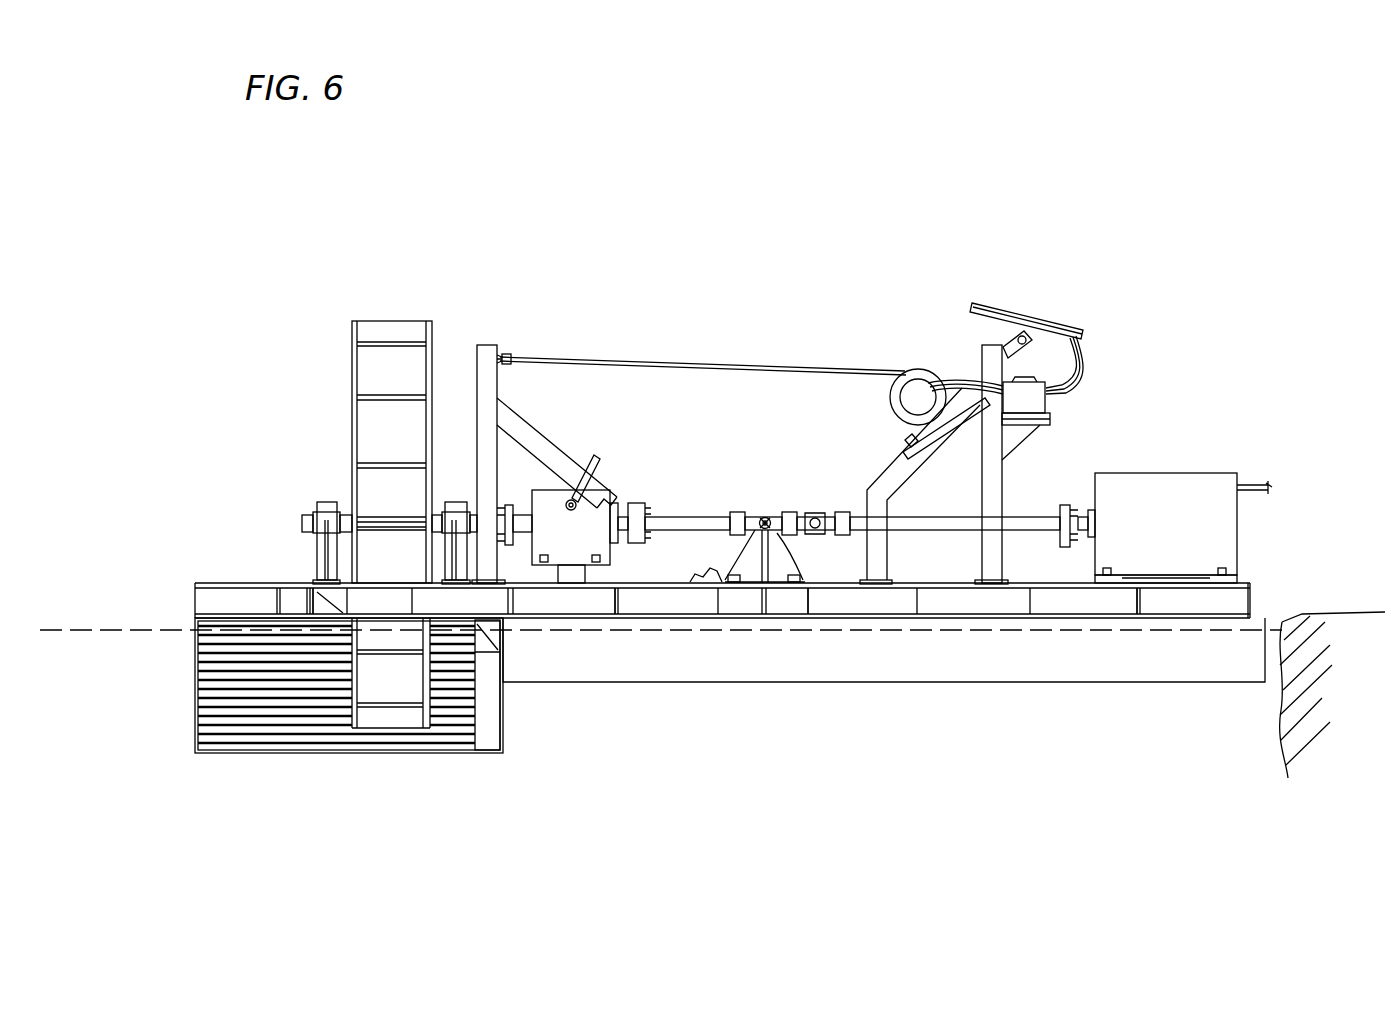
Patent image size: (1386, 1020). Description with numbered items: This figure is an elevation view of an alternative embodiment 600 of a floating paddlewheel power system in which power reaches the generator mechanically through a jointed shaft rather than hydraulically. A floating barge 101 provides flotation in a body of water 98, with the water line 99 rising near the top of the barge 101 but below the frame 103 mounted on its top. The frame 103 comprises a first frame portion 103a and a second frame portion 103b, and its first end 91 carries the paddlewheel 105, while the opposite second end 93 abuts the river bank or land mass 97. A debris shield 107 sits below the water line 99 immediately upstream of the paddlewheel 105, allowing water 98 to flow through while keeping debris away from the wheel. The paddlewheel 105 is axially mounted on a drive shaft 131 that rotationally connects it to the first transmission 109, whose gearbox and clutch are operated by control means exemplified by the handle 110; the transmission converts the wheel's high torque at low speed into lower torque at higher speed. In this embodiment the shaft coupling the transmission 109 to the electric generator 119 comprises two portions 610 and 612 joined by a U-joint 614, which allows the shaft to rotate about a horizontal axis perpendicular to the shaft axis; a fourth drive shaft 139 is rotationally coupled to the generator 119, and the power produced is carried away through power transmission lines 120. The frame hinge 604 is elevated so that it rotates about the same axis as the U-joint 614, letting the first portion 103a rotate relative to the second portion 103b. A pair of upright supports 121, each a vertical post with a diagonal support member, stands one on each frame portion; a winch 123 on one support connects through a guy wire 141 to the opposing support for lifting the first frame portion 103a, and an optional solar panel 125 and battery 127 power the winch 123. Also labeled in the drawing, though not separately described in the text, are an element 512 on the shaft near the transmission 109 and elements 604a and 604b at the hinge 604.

The alternative embodiment 600 is at (418, 200).
The first end 91 is at (187, 590).
The second end 93 is at (1250, 600).
The land mass 97 is at (1356, 612).
The body of water 98 is at (573, 750).
The water line 99 is at (80, 628).
The floating barge 101 is at (710, 682).
The frame 103 is at (812, 627).
The first frame portion 103a is at (605, 614).
The second frame portion 103b is at (942, 630).
The paddlewheel 105 is at (350, 330).
The debris shield 107 is at (290, 755).
The first transmission 109 is at (562, 536).
The handle 110 is at (598, 460).
The electric generator 119 is at (1166, 528).
The power transmission lines 120 is at (1256, 483).
The upright supports 121 is at (485, 345).
The winch 123 is at (904, 378).
The solar panel 125 is at (1020, 318).
The battery 127 is at (1048, 405).
The drive shaft 131 is at (518, 520).
The fourth drive shaft 139 is at (1068, 505).
The guy wire 141 is at (588, 360).
The flange coupling 512 is at (640, 500).
The hinge 604 is at (765, 517).
The bearing support left leg 604a is at (742, 556).
The bearing support right leg 604b is at (788, 548).
The shaft portion 610 is at (680, 515).
The shaft portion 612 is at (905, 515).
The U-joint 614 is at (795, 510).